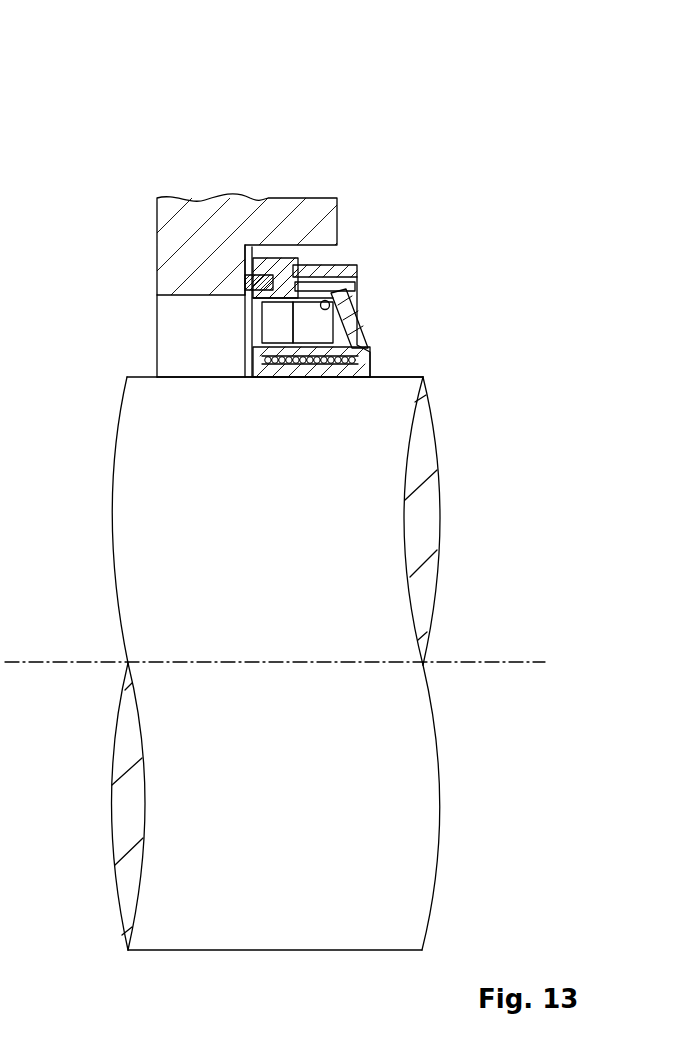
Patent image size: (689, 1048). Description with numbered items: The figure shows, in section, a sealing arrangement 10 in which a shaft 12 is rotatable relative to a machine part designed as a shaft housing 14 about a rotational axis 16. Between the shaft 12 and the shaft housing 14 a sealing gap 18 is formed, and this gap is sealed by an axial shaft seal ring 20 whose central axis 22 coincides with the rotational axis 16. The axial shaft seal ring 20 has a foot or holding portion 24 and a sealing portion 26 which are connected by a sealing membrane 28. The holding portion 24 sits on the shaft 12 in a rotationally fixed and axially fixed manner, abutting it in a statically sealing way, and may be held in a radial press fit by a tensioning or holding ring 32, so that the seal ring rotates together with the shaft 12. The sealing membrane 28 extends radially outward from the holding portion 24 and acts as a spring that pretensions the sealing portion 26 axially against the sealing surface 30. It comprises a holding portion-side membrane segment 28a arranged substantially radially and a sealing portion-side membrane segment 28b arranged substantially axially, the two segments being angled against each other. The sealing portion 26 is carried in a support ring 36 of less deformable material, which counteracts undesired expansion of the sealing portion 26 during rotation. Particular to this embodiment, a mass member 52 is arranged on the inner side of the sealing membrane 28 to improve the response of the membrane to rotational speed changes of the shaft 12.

The sealing arrangement 10 is at (530, 180).
The shaft 12 is at (275, 650).
The shaft housing 14 is at (305, 198).
The rotational axis 16 is at (280, 631).
The sealing gap 18 is at (323, 248).
The axial shaft seal ring 20 is at (232, 253).
The central axis 22 is at (487, 662).
The holding portion 24 is at (302, 389).
The sealing portion 26 is at (243, 285).
The sealing membrane 28 is at (305, 350).
The holding portion-side membrane segment 28a is at (357, 333).
The sealing portion-side membrane segment 28b is at (355, 288).
The sealing surface 30 is at (263, 258).
The holding ring 32 is at (277, 365).
The support ring 36 is at (266, 275).
The mass member 52 is at (321, 309).